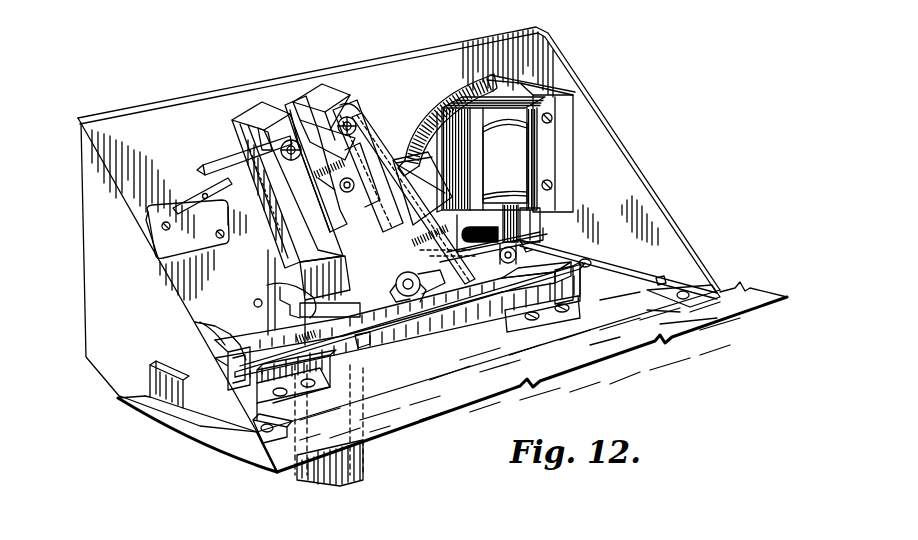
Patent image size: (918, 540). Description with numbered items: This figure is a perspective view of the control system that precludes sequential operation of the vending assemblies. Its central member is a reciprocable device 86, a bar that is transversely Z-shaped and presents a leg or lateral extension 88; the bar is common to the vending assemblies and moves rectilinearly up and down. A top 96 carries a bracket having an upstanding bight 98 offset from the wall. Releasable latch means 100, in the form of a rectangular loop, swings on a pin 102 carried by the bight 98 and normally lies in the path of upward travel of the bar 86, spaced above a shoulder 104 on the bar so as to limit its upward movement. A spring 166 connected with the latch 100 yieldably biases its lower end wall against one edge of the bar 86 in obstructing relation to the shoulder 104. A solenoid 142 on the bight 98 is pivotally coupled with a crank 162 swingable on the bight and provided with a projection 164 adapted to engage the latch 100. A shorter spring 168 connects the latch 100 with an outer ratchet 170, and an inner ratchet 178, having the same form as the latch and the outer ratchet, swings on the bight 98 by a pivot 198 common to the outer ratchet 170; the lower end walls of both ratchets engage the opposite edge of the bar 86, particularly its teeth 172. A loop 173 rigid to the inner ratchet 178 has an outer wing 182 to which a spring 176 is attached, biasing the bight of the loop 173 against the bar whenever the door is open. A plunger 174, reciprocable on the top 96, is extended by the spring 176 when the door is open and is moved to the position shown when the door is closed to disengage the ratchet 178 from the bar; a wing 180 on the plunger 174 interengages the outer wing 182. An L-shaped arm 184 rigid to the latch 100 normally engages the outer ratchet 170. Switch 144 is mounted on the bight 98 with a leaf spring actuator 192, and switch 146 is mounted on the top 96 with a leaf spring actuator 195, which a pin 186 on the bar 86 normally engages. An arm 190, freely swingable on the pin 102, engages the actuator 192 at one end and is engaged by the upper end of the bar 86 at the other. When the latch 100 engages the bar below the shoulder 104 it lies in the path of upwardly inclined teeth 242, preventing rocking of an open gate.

The reciprocable device 86 is at (332, 476).
The lateral extension 88 is at (355, 465).
The top 96 is at (613, 347).
The upstanding bight 98 is at (135, 133).
The releasable latch means 100 is at (253, 110).
The pin 102 is at (300, 112).
The shoulder 104 is at (285, 260).
The solenoid 142 is at (525, 152).
The switch 144 is at (190, 246).
The switch 146 is at (196, 325).
The crank 162 is at (435, 323).
The projection 164 is at (340, 186).
The spring 166 is at (468, 82).
The shorter spring 168 is at (355, 130).
The outer ratchet 170 is at (326, 88).
The teeth 172 is at (396, 292).
The loop 173 is at (430, 180).
The plunger 174 is at (177, 414).
The spring 176 is at (350, 366).
The inner ratchet 178 is at (368, 152).
The wing 180 is at (500, 300).
The outer wing 182 is at (520, 320).
The L-shaped arm 184 is at (420, 204).
The pin 186 is at (270, 286).
The arm 190 is at (212, 162).
The leaf spring actuator 192 is at (190, 193).
The leaf spring actuator 195 is at (358, 334).
The pivot 198 is at (363, 96).
The upwardly inclined teeth 242 is at (242, 308).